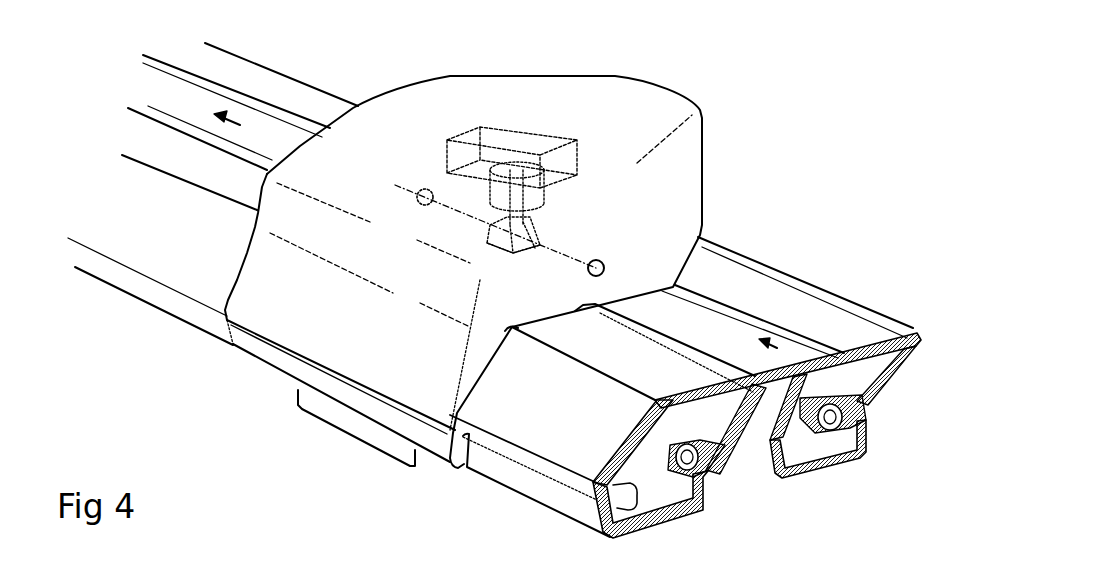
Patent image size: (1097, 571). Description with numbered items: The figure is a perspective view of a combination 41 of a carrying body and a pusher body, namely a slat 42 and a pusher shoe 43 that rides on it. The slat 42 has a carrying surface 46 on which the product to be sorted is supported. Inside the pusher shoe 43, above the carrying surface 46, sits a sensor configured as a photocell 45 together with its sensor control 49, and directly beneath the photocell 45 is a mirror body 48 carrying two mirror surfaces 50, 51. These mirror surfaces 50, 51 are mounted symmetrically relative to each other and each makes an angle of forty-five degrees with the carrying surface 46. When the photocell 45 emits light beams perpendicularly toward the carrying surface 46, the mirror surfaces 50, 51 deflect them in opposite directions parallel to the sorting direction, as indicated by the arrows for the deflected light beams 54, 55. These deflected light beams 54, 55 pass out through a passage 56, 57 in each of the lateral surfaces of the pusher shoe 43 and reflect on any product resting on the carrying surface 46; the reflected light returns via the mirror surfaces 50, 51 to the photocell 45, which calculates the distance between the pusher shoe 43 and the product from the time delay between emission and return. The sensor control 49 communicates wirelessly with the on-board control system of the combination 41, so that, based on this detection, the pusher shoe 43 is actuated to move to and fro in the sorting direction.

The combination 41 is at (820, 118).
The slat 42 is at (797, 297).
The pusher shoe 43 is at (310, 308).
The photocell 45 is at (540, 193).
The carrying surface 46 is at (253, 85).
The mirror body 48 is at (480, 263).
The sensor control 49 is at (528, 140).
The mirror surface 50 is at (518, 248).
The mirror surface 51 is at (497, 233).
The deflected light beam 54 is at (740, 333).
The deflected light beam 55 is at (258, 133).
The passage 56 is at (605, 268).
The passage 57 is at (430, 188).